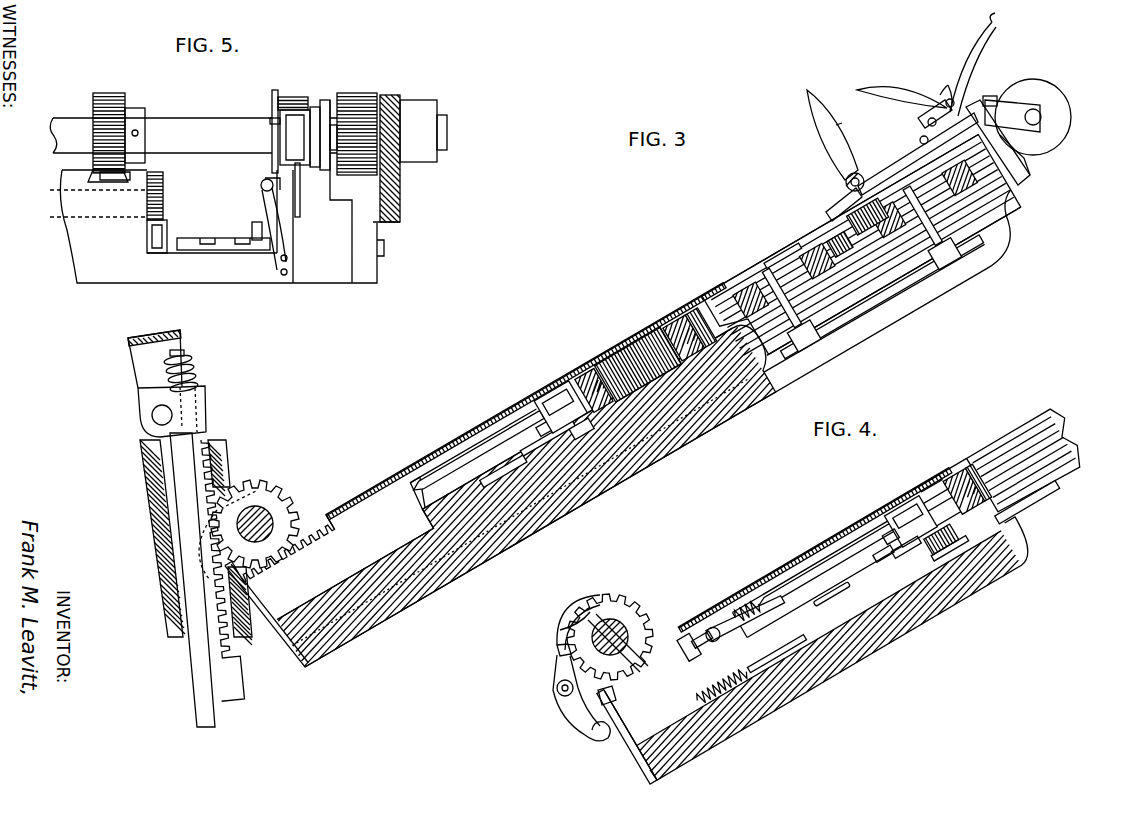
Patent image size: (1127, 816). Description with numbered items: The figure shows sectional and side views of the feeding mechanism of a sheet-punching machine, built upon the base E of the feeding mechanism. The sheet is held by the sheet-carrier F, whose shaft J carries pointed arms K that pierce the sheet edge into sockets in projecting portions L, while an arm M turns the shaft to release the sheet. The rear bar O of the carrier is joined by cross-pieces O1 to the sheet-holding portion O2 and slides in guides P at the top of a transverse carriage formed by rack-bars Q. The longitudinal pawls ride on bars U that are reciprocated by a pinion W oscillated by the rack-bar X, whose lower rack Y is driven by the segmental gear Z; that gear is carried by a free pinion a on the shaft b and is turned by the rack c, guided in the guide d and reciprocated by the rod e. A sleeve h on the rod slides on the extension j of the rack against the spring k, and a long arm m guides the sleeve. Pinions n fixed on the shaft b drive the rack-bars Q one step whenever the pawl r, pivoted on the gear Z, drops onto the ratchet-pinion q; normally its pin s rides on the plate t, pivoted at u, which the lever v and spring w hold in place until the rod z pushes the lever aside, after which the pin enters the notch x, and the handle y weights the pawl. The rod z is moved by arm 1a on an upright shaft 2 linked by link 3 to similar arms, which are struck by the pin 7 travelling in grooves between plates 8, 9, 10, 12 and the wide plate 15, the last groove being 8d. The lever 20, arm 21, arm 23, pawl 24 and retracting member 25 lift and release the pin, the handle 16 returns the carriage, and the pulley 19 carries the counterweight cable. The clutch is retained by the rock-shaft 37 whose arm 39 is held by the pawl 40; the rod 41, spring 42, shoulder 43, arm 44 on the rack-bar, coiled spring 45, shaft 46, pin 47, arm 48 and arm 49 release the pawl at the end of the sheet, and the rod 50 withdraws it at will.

In FIG. 3, the arm 1a is at (895, 272).
In FIG. 3, the upright shaft 2 is at (760, 270).
In FIG. 3, the link 3 is at (880, 280).
In FIG. 4, the link 3 is at (895, 610).
In FIG. 3, the pin 7 is at (920, 145).
In FIG. 3, the plate 8 is at (1002, 198).
In FIG. 4, the groove 8d is at (942, 468).
In FIG. 3, the plate 9 is at (950, 228).
In FIG. 3, the plate 10 is at (676, 330).
In FIG. 3, the plate 12 is at (624, 340).
In FIG. 4, the plate 12 is at (1038, 432).
In FIG. 3, the plate 15 is at (418, 455).
In FIG. 4, the plate 15 is at (744, 592).
In FIG. 3, the handle 16 is at (996, 22).
In FIG. 3, the pulley 19 is at (1064, 134).
In FIG. 3, the hand-lever 20 is at (885, 88).
In FIG. 3, the arm 21 is at (918, 120).
In FIG. 3, the second arm 23 is at (944, 92).
In FIG. 3, the pawl 24 is at (988, 96).
In FIG. 3, the retracting member 25 is at (1005, 102).
In FIG. 5, the rock-shaft 37 is at (52, 192).
In FIG. 4, the rock-shaft 37 is at (622, 730).
In FIG. 5, the arm 39 is at (163, 176).
In FIG. 4, the arm 39 is at (686, 628).
In FIG. 5, the pawl 40 is at (166, 200).
In FIG. 4, the pawl 40 is at (702, 626).
In FIG. 3, the rod 41 is at (470, 455).
In FIG. 4, the rod 41 is at (808, 580).
In FIG. 4, the spring 42 is at (765, 612).
In FIG. 3, the shoulder 43 is at (520, 430).
In FIG. 4, the shoulder 43 is at (892, 525).
In FIG. 4, the arm 44 is at (880, 538).
In FIG. 3, the coiled spring 45 is at (548, 437).
In FIG. 4, the coiled spring 45 is at (940, 598).
In FIG. 3, the short vertical shaft 46 is at (583, 420).
In FIG. 4, the short vertical shaft 46 is at (922, 555).
In FIG. 3, the pin 47 is at (520, 455).
In FIG. 4, the pin 47 is at (890, 560).
In FIG. 3, the arm 48 is at (545, 408).
In FIG. 4, the arm 48 is at (920, 508).
In FIG. 3, the arm 49 is at (592, 372).
In FIG. 4, the arm 49 is at (953, 478).
In FIG. 4, the rod 50 is at (818, 598).
In FIG. 5, the pinion a is at (362, 92).
In FIG. 3, the pinion a is at (250, 515).
In FIG. 5, the shaft b is at (450, 124).
In FIG. 3, the shaft b is at (262, 508).
In FIG. 4, the shaft b is at (600, 622).
In FIG. 3, the rack c is at (224, 569).
In FIG. 5, the guide d is at (401, 188).
In FIG. 3, the guide d is at (168, 630).
In FIG. 3, the rod e is at (136, 388).
In FIG. 5, the base E is at (230, 191).
In FIG. 3, the base E is at (572, 378).
In FIG. 4, the base E is at (935, 480).
In FIG. 3, the sheet-carrier F is at (844, 115).
In FIG. 3, the sleeve h is at (174, 412).
In FIG. 3, the extension j is at (168, 353).
In FIG. 3, the shaft J is at (843, 180).
In FIG. 3, the spring k is at (196, 378).
In FIG. 3, the arm K is at (845, 184).
In FIG. 3, the projecting portion L is at (826, 212).
In FIG. 3, the long arm m is at (196, 690).
In FIG. 3, the arm M is at (825, 148).
In FIG. 5, the pinion n is at (108, 93).
In FIG. 3, the bar O is at (958, 91).
In FIG. 3, the cross-piece O1 is at (924, 123).
In FIG. 3, the sheet-holding portion O2 is at (918, 141).
In FIG. 3, the guide P is at (1026, 160).
In FIG. 4, the ratchet-pinion q is at (560, 622).
In FIG. 5, the rack-bar Q is at (116, 182).
In FIG. 5, the pawl r is at (300, 110).
In FIG. 3, the pawl r is at (735, 292).
In FIG. 4, the pawl r is at (556, 690).
In FIG. 5, the pin s is at (270, 120).
In FIG. 4, the pin s is at (556, 650).
In FIG. 5, the plate t is at (276, 89).
In FIG. 4, the plate t is at (572, 620).
In FIG. 5, the pivot u is at (262, 190).
In FIG. 4, the pivot u is at (602, 699).
In FIG. 3, the longitudinal bar U is at (662, 330).
In FIG. 4, the longitudinal bar U is at (988, 472).
In FIG. 5, the horizontal lever v is at (252, 232).
In FIG. 4, the horizontal lever v is at (648, 772).
In FIG. 4, the spring w is at (730, 708).
In FIG. 3, the pinion W is at (652, 366).
In FIG. 4, the notch x is at (598, 618).
In FIG. 3, the rack-bar X is at (473, 452).
In FIG. 5, the handle y is at (298, 218).
In FIG. 4, the handle y is at (584, 737).
In FIG. 3, the rack Y is at (375, 497).
In FIG. 5, the rod z is at (296, 96).
In FIG. 4, the rod z is at (630, 606).
In FIG. 3, the segmental gear Z is at (296, 497).